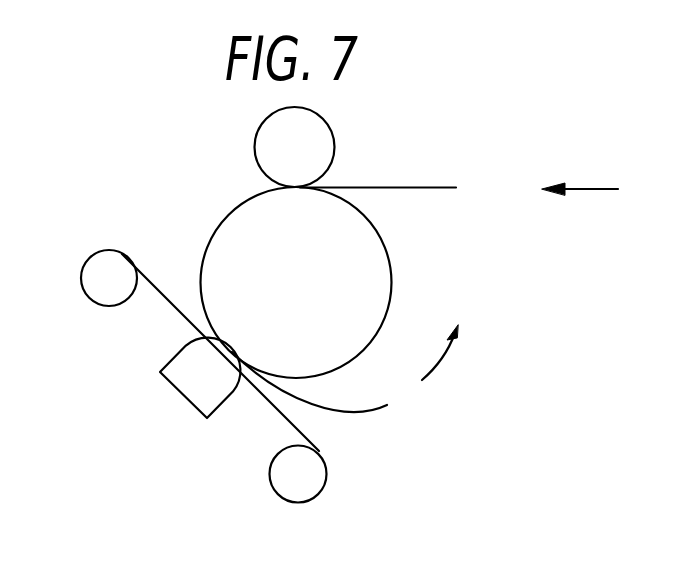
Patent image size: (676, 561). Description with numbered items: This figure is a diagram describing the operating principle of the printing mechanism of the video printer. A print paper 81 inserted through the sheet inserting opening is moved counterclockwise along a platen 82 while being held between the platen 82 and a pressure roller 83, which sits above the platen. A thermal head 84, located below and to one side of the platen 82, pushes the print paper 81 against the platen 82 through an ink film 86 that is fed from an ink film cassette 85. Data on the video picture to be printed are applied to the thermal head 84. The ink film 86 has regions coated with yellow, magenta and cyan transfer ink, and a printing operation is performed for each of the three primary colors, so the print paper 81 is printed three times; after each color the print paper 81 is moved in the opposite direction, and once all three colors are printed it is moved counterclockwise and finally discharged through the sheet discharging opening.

The print paper 81 is at (414, 186).
The platen 82 is at (388, 276).
The pressure roller 83 is at (275, 136).
The thermal head 84 is at (197, 391).
The ink film cassette 85 is at (97, 280).
The ink film 86 is at (158, 284).